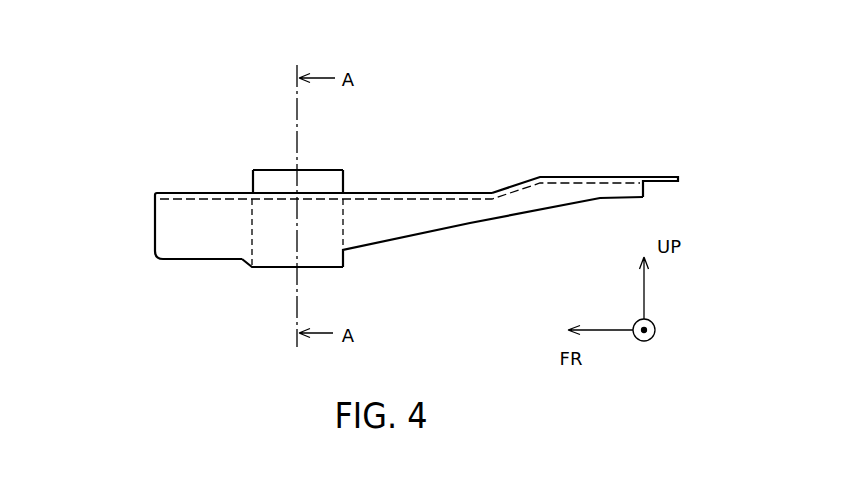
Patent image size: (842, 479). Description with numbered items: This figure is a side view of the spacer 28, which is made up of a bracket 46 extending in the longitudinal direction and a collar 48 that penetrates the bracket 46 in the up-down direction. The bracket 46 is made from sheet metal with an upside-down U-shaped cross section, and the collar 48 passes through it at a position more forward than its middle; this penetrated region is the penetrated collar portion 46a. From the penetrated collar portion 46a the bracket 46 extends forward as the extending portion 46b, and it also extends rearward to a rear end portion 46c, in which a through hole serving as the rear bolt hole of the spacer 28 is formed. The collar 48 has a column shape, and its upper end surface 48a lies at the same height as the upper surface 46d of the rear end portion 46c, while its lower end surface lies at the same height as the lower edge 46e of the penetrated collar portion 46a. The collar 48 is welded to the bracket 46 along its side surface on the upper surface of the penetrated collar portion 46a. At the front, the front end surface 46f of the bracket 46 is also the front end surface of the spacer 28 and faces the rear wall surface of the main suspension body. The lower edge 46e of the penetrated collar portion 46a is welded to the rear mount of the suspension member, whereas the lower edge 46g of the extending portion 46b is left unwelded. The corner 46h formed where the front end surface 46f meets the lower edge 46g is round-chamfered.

The spacer 28 is at (478, 87).
The bracket 46 is at (395, 215).
The penetrated collar portion 46a is at (320, 228).
The extending portion 46b is at (197, 213).
The rear end portion 46c is at (575, 190).
The upper surface of the rear end portion 46d is at (622, 177).
The lower edge of the penetrated collar portion 46e is at (267, 265).
The front end surface 46f is at (153, 217).
The lower edge of the extending portion 46g is at (193, 260).
The corner 46h is at (155, 258).
The collar 48 is at (317, 183).
The upper end surface of the collar 48a is at (275, 170).